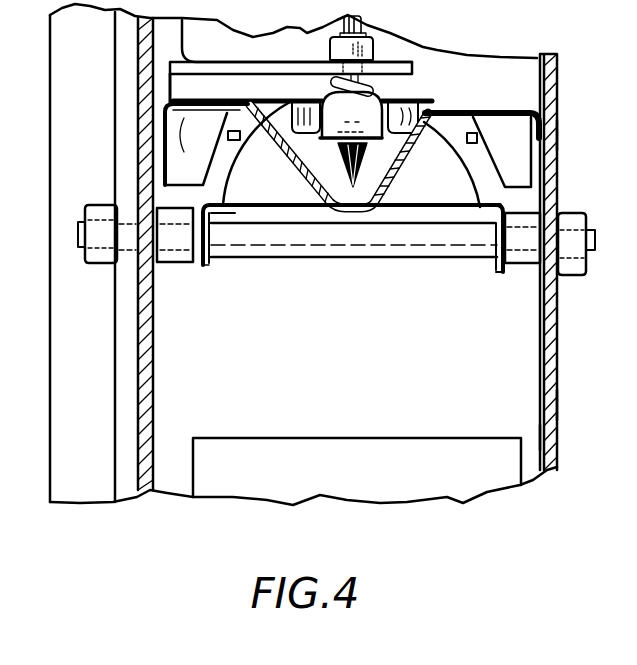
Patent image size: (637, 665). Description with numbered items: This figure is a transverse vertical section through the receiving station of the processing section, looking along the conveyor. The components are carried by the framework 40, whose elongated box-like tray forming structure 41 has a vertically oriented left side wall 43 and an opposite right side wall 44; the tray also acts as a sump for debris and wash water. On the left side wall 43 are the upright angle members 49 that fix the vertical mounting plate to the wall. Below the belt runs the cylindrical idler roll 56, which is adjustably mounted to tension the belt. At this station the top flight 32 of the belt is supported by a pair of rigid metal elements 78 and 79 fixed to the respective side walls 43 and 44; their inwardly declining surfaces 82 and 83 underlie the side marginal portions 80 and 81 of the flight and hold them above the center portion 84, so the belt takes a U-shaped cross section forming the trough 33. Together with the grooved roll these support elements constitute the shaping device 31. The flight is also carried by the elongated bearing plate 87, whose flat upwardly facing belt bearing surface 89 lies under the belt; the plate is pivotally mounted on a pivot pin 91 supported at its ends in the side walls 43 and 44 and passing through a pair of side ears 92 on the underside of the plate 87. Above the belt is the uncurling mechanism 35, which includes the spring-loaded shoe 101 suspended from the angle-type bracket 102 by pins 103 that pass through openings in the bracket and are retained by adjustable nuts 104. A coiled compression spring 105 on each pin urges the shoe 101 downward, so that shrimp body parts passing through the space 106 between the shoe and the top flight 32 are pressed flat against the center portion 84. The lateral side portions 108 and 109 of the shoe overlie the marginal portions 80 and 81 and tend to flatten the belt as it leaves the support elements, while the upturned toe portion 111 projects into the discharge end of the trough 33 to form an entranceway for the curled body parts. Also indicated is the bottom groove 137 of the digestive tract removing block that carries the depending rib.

The shaping device 31 is at (505, 110).
The top flight 32 is at (447, 146).
The trough 33 is at (286, 150).
The uncurling mechanism 35 is at (327, 85).
The framework 40 is at (558, 372).
The tray forming structure 41 is at (558, 405).
The left side wall 43 is at (138, 392).
The right side wall 44 is at (557, 437).
The angle members 49 is at (48, 398).
The cylindrical idler roll 56 is at (378, 438).
The belt support element 78 is at (194, 142).
The belt support element 79 is at (559, 135).
The side marginal portion 80 is at (316, 161).
The side marginal portion 81 is at (420, 163).
The inwardly declining surface 82 is at (318, 189).
The inwardly declining surface 83 is at (422, 182).
The center portion 84 is at (338, 210).
The bearing plate 87 is at (226, 226).
The belt bearing surface 89 is at (449, 192).
The pivot pin 91 is at (447, 257).
The side ears 92 is at (188, 263).
The shoe 101 is at (232, 142).
The angle-type bracket 102 is at (271, 62).
The pins 103 is at (364, 24).
The nuts 104 is at (327, 62).
The coiled compression spring 105 is at (379, 91).
The space 106 is at (383, 190).
The lateral side portion 108 is at (233, 131).
The lateral side portion 109 is at (486, 127).
The toe portion 111 is at (354, 118).
The bottom groove 137 is at (429, 108).